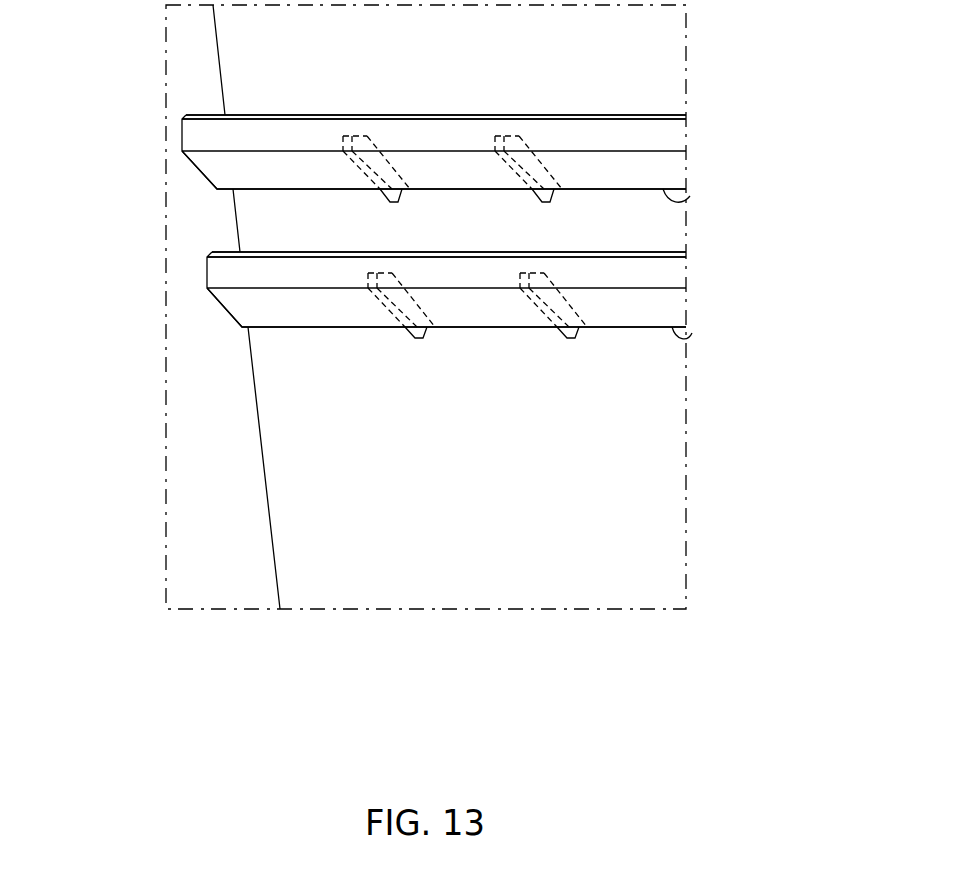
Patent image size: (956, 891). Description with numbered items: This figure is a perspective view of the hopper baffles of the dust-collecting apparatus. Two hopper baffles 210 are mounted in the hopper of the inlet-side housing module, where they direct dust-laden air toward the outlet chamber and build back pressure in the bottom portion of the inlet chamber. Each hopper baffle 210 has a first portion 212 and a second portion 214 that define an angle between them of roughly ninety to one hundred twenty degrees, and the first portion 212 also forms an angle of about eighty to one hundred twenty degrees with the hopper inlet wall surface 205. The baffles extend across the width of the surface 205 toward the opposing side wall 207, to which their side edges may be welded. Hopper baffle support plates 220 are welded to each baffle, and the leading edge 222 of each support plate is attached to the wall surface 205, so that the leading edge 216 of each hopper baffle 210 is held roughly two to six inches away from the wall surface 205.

The hopper inlet wall surface 205 is at (572, 449).
The side wall of the hopper 207 is at (210, 405).
The hopper baffle 210 is at (673, 134).
The first portion 212 is at (325, 170).
The second portion 214 is at (325, 128).
The leading edge of the hopper baffle 216 is at (688, 200).
The hopper baffle support plate 220 is at (517, 162).
The leading edge of the hopper baffle support plate 222 is at (430, 330).